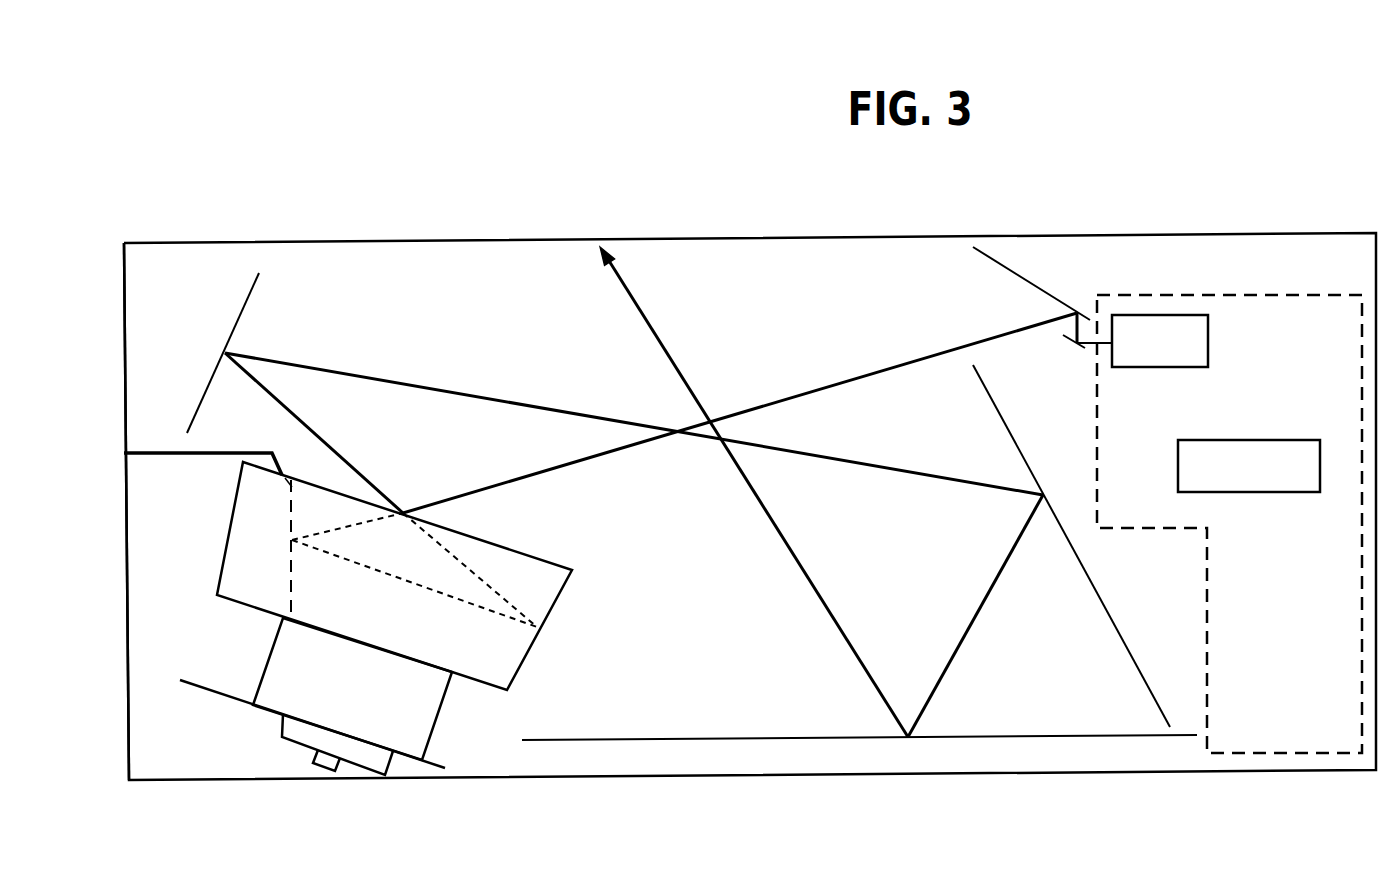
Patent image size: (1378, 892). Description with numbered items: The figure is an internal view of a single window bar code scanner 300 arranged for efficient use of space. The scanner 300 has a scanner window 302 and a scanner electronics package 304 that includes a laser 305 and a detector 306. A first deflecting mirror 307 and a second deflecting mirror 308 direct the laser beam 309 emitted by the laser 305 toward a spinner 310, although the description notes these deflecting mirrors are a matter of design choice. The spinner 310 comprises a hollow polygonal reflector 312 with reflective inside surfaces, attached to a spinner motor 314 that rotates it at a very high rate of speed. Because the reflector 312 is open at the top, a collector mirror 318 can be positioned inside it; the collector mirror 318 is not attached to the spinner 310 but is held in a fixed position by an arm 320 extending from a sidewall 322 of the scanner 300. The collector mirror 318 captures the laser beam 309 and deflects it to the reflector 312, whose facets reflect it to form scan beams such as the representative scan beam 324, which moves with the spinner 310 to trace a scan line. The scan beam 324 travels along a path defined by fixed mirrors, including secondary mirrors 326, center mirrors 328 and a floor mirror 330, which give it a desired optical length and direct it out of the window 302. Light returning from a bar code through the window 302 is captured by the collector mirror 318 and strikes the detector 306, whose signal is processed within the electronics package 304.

The bar code scanner 300 is at (321, 114).
The scanner window 302 is at (470, 240).
The scanner electronics package 304 is at (1232, 292).
The laser 305 is at (1208, 340).
The detector 306 is at (1255, 493).
The first deflecting mirror 307 is at (1083, 350).
The second deflecting mirror 308 is at (997, 265).
The laser beam 309 is at (852, 377).
The spinner 310 is at (580, 662).
The polygonal reflector 312 is at (560, 602).
The spinner motor 314 is at (267, 660).
The collector mirror 318 is at (292, 585).
The arm 320 is at (198, 457).
The sidewall 322 is at (125, 378).
The scan beam 324 is at (333, 448).
The secondary mirrors 326 is at (247, 300).
The center mirrors 328 is at (1118, 636).
The floor mirror 330 is at (1053, 735).